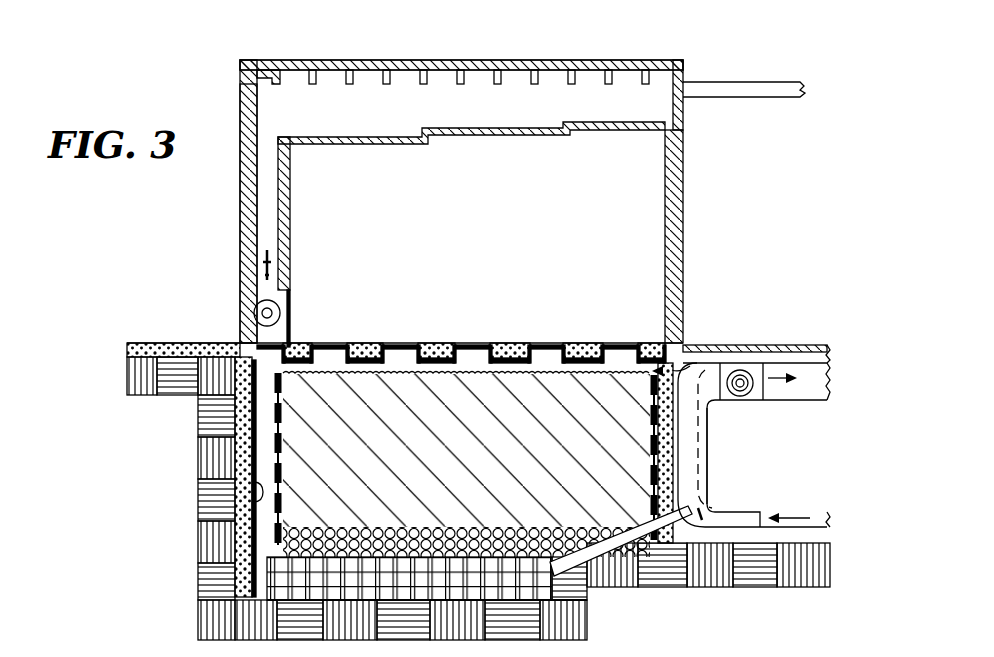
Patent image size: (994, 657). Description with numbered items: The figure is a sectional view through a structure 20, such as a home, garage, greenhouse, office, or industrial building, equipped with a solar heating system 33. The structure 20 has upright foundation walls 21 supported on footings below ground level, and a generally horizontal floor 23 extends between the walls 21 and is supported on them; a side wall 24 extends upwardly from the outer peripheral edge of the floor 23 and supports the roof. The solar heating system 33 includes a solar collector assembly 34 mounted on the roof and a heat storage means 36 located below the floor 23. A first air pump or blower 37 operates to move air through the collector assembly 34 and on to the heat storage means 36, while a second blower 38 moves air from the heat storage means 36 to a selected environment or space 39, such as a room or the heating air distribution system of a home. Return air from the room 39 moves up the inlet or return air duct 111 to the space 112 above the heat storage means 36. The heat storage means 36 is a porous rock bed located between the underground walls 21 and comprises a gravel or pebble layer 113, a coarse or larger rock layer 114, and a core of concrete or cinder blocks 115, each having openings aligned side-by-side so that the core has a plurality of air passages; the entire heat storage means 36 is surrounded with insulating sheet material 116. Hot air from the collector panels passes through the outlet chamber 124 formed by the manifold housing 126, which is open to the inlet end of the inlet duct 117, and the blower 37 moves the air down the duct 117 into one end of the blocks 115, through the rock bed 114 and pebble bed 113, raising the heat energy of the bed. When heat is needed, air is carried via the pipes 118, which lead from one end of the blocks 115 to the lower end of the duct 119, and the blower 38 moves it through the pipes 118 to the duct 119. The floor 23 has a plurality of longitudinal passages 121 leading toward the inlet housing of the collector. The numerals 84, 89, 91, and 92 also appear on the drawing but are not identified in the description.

The structure 20 is at (230, 76).
The solar collector assembly 34 is at (578, 52).
The collection or outlet chamber 124 is at (397, 122).
The manifold housing or casing 126 is at (540, 137).
The inlet duct 117 is at (290, 197).
The side wall 24 is at (246, 230).
The first air pump or blower 37 is at (254, 313).
The longitudinal passages 121 is at (390, 354).
The floor 23 is at (578, 345).
The space above the heat storage means 112 is at (495, 368).
The solar heating system 33 is at (710, 326).
The gravel or pebble layer 113 is at (530, 450).
The duct 119 is at (797, 393).
The second blower 38 is at (740, 397).
The inlet duct or return air duct 111 is at (686, 450).
The selected environment or space 39 is at (835, 465).
The foundation walls 21 is at (243, 463).
The heat storage means 36 is at (460, 515).
The insulating sheet material 116 is at (238, 503).
The coarse or larger rock layer 114 is at (325, 528).
The pipes 118 is at (613, 543).
The concrete or cinder blocks 115 is at (500, 577).
The element 84 is at (920, 632).
The element 89 is at (436, 646).
The element 91 is at (498, 647).
The element 92 is at (494, 648).